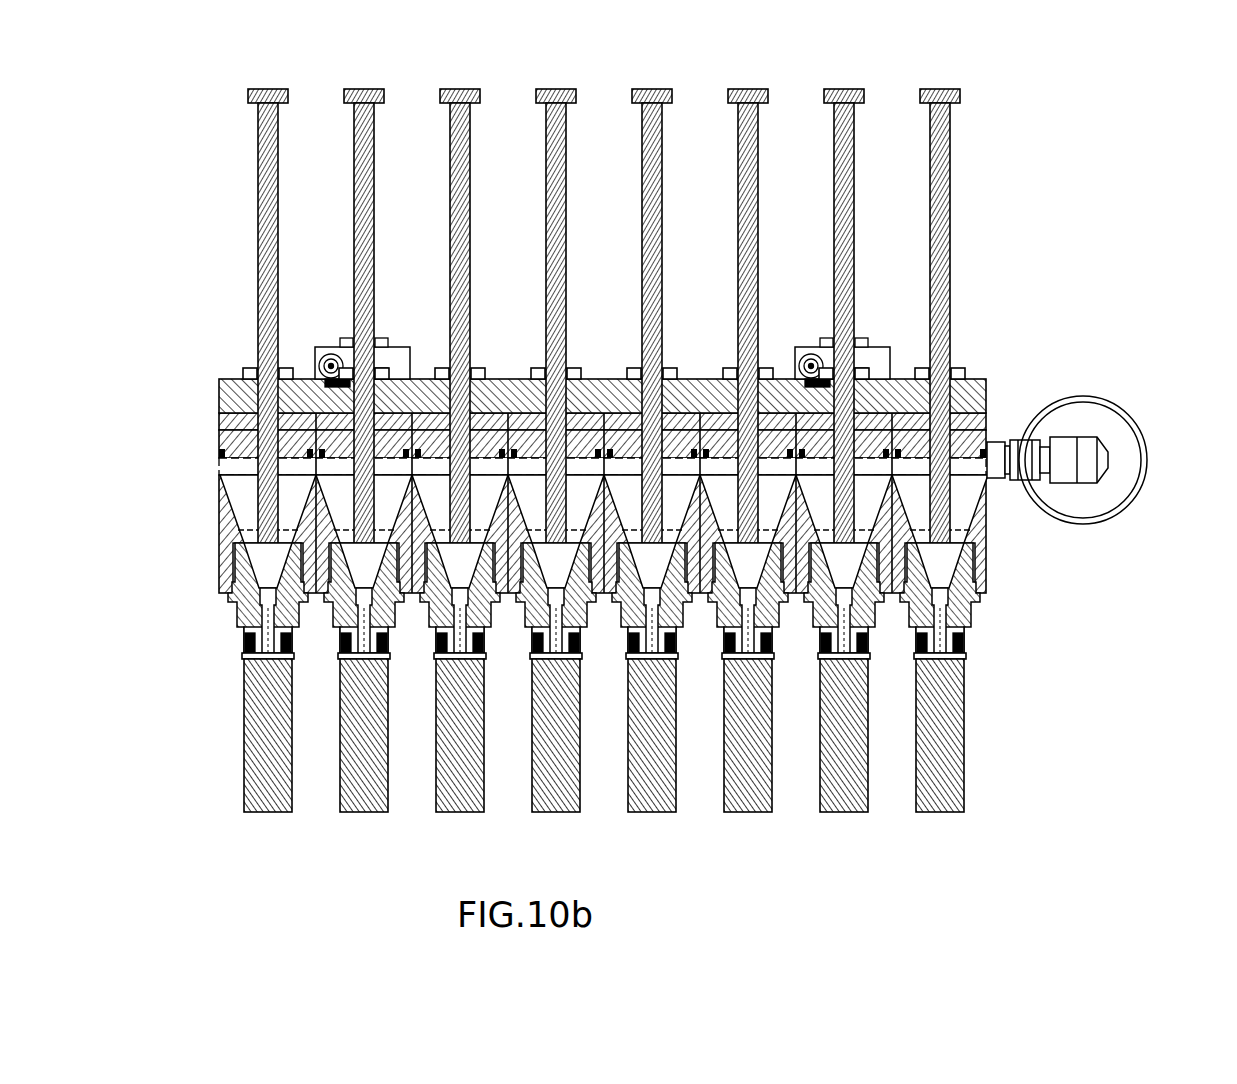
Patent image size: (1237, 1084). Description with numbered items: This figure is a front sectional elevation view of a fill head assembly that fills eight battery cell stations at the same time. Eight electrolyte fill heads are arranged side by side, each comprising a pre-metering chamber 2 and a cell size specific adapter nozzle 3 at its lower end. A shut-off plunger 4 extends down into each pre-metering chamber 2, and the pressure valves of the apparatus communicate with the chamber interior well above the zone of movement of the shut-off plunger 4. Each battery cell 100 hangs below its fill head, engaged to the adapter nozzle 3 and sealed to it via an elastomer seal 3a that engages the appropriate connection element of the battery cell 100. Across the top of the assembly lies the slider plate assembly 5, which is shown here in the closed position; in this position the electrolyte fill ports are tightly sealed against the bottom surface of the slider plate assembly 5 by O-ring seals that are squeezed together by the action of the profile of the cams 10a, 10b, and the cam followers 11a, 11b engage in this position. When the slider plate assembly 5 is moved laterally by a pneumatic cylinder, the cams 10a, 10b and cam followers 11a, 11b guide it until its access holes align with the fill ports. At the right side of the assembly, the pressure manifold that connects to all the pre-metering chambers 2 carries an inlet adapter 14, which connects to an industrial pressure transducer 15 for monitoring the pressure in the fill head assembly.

The pre-metering chamber 2 is at (246, 501).
The adapter nozzle 3 is at (246, 648).
The elastomer seal 3a is at (288, 649).
The shut-off plunger 4 is at (258, 318).
The slider plate assembly 5 is at (232, 394).
The cam 10a is at (325, 384).
The cam 10b is at (805, 384).
The cam follower 11a is at (340, 346).
The cam follower 11b is at (820, 346).
The inlet adapter 14 is at (1068, 450).
The pressure transducer 15 is at (1122, 441).
The battery cell 100 is at (229, 752).